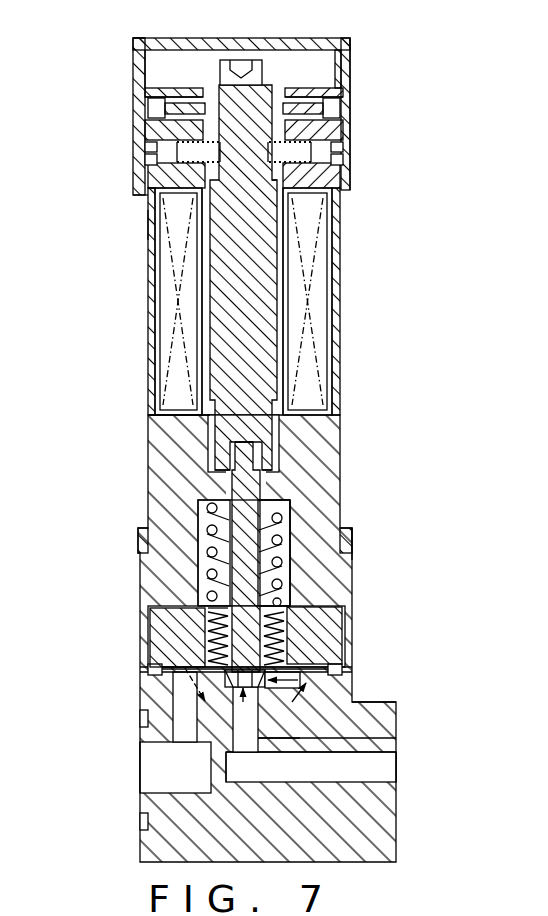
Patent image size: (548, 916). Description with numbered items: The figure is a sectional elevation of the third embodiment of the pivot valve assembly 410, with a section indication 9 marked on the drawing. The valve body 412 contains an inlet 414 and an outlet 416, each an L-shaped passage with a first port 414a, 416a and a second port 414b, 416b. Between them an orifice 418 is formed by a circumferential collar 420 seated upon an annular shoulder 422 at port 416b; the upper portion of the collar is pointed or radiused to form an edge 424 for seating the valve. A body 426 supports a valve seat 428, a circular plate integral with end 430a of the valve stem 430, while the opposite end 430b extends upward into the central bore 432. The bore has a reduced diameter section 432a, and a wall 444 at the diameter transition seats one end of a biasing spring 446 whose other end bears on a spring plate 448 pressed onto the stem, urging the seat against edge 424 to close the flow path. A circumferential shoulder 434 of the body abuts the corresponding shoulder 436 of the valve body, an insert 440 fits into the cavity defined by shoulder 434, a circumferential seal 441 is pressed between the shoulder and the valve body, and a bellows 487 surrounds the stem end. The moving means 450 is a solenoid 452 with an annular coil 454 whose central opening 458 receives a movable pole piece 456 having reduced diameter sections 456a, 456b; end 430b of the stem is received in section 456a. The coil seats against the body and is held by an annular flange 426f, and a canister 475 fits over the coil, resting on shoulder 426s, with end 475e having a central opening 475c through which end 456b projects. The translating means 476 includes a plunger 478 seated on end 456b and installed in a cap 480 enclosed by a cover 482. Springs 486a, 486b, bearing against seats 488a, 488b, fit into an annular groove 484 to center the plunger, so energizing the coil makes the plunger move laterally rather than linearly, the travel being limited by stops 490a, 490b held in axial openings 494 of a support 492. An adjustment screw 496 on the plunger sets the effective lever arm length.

The flow direction 9 is at (245, 691).
The valve assembly 410 is at (418, 522).
The valve body 412 is at (400, 818).
The inlet 414 is at (200, 782).
The first port 414a is at (140, 784).
The second port 414b is at (140, 719).
The outlet 416 is at (365, 777).
The first port 416a is at (397, 771).
The second port 416b is at (160, 741).
The orifice 418 is at (245, 745).
The circumferential collar 420 is at (378, 705).
The annular shoulder 422 is at (335, 740).
The edge 424 is at (218, 655).
The body 426 is at (350, 600).
The annular flange 426f is at (148, 408).
The circumferential shoulder 426s is at (142, 585).
The valve seat 428 is at (340, 670).
The valve stem 430 is at (222, 540).
The stem end 430a is at (208, 638).
The stem end 430b is at (232, 462).
The central bore 432 is at (292, 537).
The reduced diameter section 432a is at (290, 476).
The circumferential shoulder 434 is at (335, 634).
The circumferential shoulder 436 is at (152, 672).
The insert 440 is at (345, 668).
The circumferential seal 441 is at (352, 694).
The wall 444 is at (345, 524).
The biasing spring 446 is at (320, 573).
The spring plate 448 is at (300, 590).
The moving means 450 is at (126, 291).
The solenoid 452 is at (320, 298).
The coil 454 is at (165, 261).
The pole piece 456 is at (282, 331).
The reduced diameter section 456a is at (280, 446).
The reduced diameter section 456b is at (330, 222).
The central opening 458 is at (300, 375).
The canister 475 is at (150, 327).
The central opening 475c is at (150, 222).
The canister end 475e is at (150, 198).
The translating means 476 is at (275, 66).
The plunger 478 is at (352, 43).
The cap 480 is at (138, 35).
The cover 482 is at (160, 82).
The annular groove 484 is at (343, 138).
The spring 486a is at (343, 155).
The spring 486b is at (152, 150).
The bellows 487 is at (290, 648).
The spring seat 488a is at (343, 168).
The spring seat 488b is at (152, 163).
The plunger stop 490a is at (335, 70).
The plunger stop 490b is at (210, 140).
The support 492 is at (137, 75).
The axial opening 494 is at (185, 150).
The adjustment screw 496 is at (226, 60).